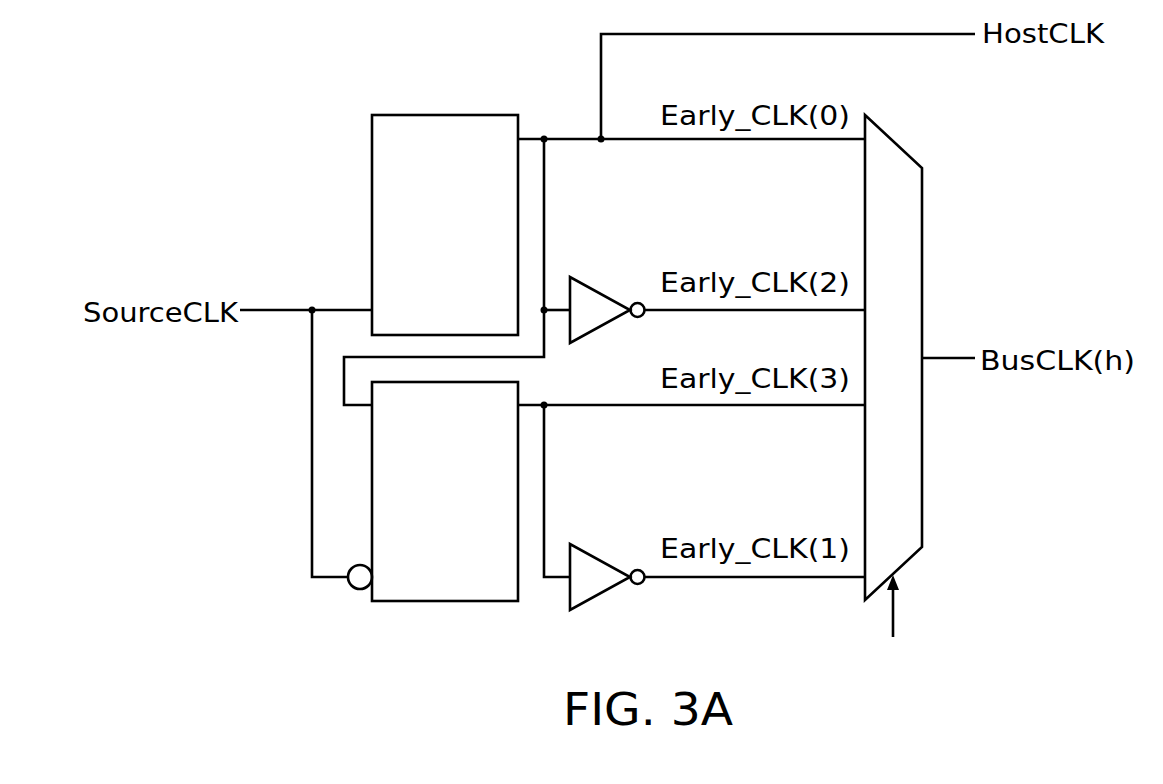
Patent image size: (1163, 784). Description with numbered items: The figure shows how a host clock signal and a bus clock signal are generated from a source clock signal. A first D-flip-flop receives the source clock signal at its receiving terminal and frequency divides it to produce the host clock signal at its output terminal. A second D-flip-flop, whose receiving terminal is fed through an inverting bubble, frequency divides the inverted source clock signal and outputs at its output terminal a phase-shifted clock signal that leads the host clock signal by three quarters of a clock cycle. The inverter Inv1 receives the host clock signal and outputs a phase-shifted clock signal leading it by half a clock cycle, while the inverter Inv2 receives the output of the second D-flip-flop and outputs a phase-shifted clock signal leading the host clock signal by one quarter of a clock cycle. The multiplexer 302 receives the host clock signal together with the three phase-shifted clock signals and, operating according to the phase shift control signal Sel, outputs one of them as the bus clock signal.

The multiplexer 302 is at (892, 137).
The inverter Inv1 is at (611, 290).
The inverter Inv2 is at (609, 560).
The phase shift control signal Sel is at (892, 624).